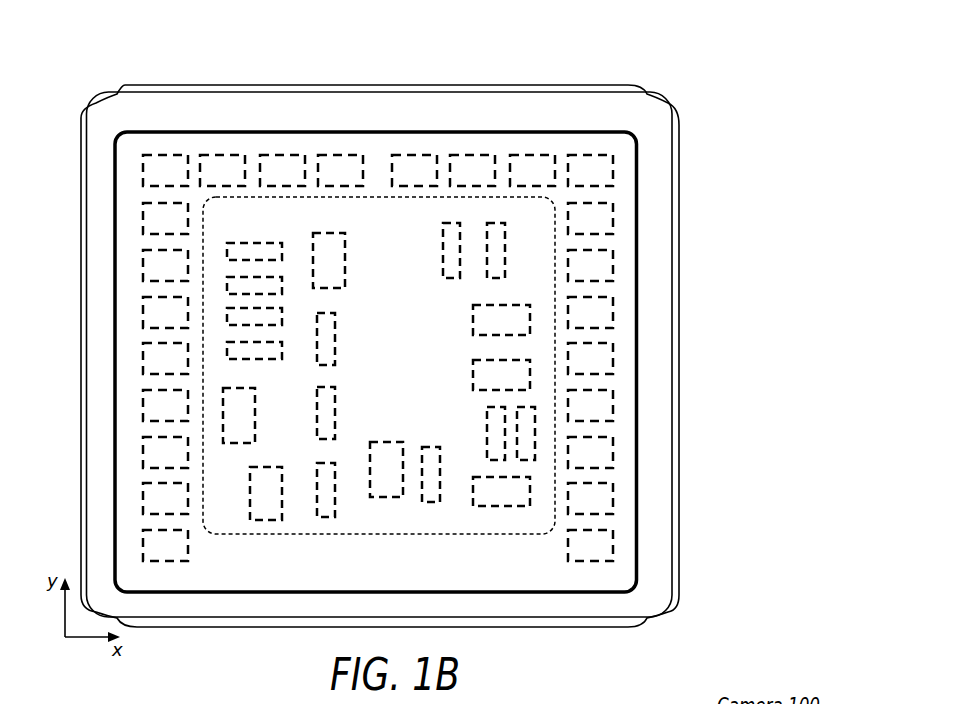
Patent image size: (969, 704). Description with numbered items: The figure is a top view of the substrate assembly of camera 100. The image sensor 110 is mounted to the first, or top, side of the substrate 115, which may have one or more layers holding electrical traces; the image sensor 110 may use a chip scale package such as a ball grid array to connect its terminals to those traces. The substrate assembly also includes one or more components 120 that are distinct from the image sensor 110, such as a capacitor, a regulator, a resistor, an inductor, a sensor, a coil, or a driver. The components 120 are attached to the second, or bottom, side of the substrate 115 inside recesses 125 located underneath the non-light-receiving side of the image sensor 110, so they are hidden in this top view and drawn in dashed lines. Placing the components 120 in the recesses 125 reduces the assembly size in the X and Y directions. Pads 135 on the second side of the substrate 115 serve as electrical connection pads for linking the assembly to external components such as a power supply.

The camera 100 is at (698, 80).
The image sensor 110 is at (373, 131).
The substrate 115 is at (678, 398).
The components 120 is at (334, 334).
The recesses 125 is at (555, 245).
The pads 135 is at (613, 313).